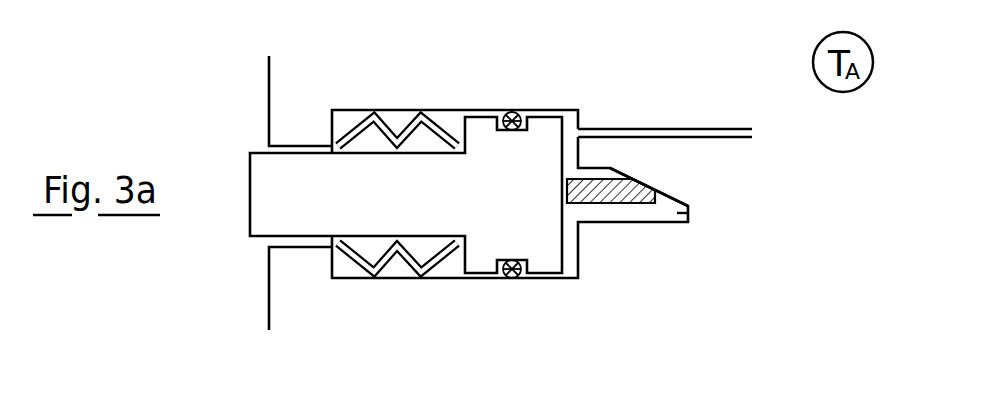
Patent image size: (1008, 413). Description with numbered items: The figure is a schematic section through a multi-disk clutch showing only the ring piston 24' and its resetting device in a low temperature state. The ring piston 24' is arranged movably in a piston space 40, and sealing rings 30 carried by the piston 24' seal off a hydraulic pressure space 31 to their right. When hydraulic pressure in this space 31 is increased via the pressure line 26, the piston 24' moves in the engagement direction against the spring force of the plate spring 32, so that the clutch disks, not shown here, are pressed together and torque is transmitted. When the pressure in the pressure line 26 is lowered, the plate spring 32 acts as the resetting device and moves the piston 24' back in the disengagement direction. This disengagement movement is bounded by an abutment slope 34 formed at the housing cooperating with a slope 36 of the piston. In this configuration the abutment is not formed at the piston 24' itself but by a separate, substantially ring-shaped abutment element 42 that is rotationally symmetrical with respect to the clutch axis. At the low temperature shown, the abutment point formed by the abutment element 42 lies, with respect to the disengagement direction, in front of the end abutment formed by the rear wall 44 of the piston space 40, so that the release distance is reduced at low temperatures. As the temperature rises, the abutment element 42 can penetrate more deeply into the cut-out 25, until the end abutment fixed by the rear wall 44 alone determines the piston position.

The ring piston 24' is at (418, 163).
The cut-out 25 is at (698, 211).
The pressure line 26 is at (736, 128).
The sealing rings 30 is at (508, 111).
The hydraulic pressure space 31 is at (578, 121).
The plate spring 32 is at (407, 277).
The abutment slope 34 is at (661, 193).
The slope 36 is at (642, 197).
The piston space 40 is at (452, 279).
The abutment element 42 is at (600, 204).
The rear wall of the piston space 44 is at (580, 268).